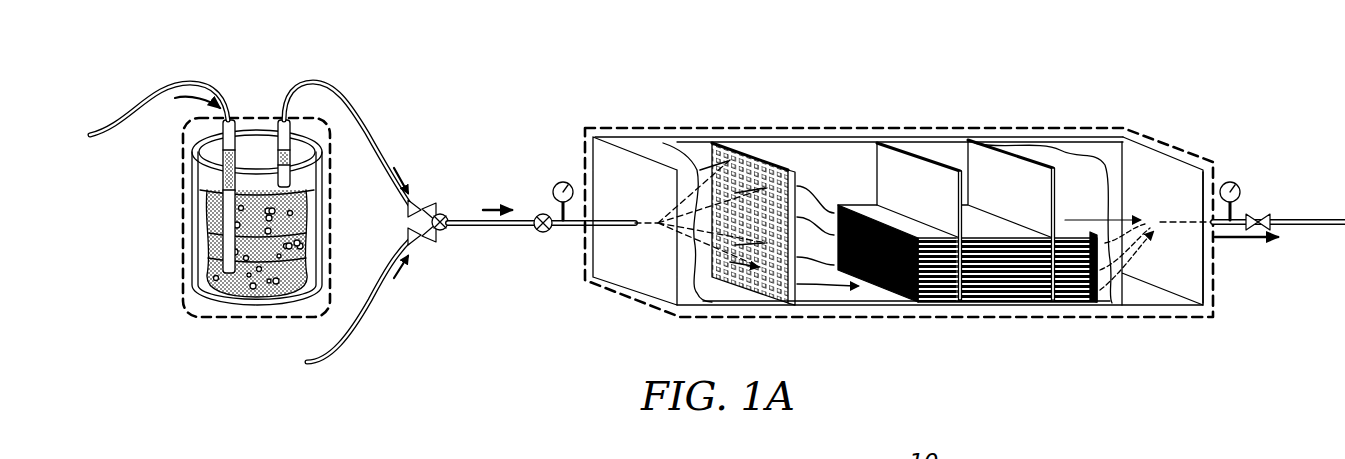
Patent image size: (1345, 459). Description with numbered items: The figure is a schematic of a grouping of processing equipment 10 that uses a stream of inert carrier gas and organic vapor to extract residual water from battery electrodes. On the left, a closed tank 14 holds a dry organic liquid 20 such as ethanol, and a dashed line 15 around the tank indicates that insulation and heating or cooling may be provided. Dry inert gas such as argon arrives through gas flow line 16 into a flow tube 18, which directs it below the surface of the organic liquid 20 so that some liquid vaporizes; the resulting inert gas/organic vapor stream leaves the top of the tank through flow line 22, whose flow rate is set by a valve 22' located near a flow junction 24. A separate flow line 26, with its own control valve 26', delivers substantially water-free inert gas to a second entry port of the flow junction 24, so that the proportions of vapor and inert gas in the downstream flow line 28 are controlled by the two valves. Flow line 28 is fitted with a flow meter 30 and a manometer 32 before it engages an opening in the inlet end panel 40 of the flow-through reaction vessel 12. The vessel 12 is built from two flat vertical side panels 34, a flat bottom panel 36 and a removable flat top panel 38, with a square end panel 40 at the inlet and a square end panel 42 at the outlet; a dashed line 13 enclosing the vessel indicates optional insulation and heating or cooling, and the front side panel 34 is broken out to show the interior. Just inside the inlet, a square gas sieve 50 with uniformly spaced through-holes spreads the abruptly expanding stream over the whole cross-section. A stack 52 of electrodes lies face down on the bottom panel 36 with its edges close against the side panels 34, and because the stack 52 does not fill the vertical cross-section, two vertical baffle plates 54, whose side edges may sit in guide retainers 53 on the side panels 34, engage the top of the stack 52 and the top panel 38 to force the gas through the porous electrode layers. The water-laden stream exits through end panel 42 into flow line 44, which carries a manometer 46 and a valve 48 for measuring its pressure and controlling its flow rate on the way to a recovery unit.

The grouping of processing equipment 10 is at (912, 105).
The flow-through reaction vessel 12 is at (1100, 327).
The dashed line 13 is at (1168, 318).
The closed tank 14 is at (200, 253).
The dashed line 15 is at (332, 232).
The gas flow line 16 is at (152, 100).
The flow tube 18 is at (227, 135).
The organic liquid 20 is at (252, 252).
The flow line 22 is at (348, 132).
The valve 22' is at (435, 185).
The flow junction 24 is at (449, 236).
The flow line 26 is at (370, 301).
The control valve 26' is at (433, 268).
The flow line 28 is at (477, 218).
The flow meter 30 is at (538, 214).
The manometer 32 is at (563, 182).
The side panels 34 is at (687, 292).
The bottom panel 36 is at (862, 310).
The top panel 38 is at (1093, 148).
The end panel 40 is at (617, 267).
The end panel 42 is at (1210, 260).
The flow line 44 is at (1291, 218).
The manometer 46 is at (1230, 180).
The valve 48 is at (1258, 208).
The gas sieve 50 is at (770, 273).
The stack 52 is at (990, 284).
The guide retainers 53 is at (960, 284).
The baffle plates 54 is at (900, 200).